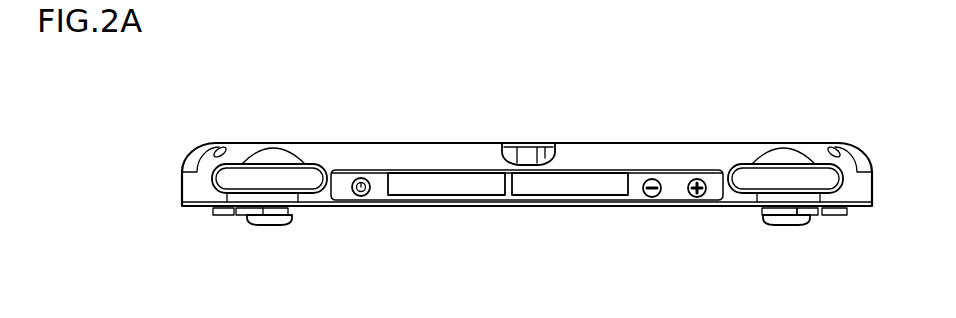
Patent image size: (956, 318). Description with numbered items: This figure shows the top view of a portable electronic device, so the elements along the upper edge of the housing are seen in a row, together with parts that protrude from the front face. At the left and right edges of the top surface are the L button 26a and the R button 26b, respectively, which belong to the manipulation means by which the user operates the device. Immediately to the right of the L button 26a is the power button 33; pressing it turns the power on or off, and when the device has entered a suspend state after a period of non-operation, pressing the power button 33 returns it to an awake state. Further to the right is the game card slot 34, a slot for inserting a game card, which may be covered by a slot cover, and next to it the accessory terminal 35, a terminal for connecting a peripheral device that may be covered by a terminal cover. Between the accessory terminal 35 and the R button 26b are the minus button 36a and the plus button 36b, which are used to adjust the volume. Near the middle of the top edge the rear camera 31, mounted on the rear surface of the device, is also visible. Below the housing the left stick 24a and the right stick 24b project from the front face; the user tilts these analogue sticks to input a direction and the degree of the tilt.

The left stick 24a is at (267, 226).
The right stick 24b is at (786, 226).
The L button 26a is at (283, 178).
The R button 26b is at (798, 178).
The rear camera 31 is at (528, 157).
The power button 33 is at (360, 197).
The game card slot 34 is at (446, 188).
The accessory terminal 35 is at (570, 187).
The minus button 36a is at (653, 198).
The plus button 36b is at (702, 182).